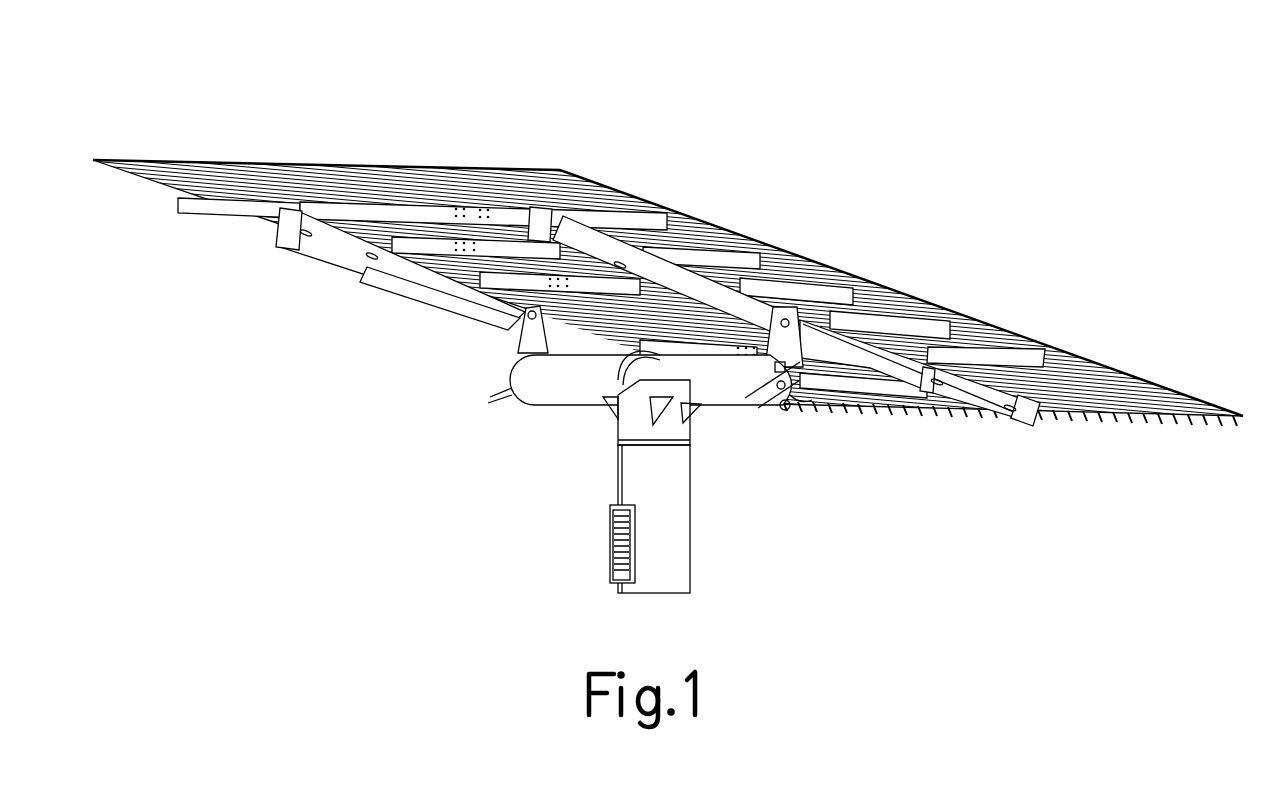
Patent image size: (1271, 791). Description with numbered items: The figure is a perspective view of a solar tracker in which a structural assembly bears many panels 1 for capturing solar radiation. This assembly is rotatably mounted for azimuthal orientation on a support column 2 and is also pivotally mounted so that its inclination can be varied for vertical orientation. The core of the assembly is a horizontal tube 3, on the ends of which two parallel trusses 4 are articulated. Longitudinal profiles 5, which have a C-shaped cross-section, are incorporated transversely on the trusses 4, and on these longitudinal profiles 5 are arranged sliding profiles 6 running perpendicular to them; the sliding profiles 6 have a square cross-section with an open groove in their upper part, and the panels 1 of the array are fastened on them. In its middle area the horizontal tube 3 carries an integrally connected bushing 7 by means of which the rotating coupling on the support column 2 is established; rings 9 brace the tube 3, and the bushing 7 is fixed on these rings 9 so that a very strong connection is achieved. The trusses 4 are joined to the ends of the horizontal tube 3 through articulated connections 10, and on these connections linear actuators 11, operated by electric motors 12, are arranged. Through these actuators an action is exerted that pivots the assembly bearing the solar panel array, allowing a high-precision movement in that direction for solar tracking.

The panels 1 is at (929, 300).
The support column 2 is at (670, 497).
The horizontal tube 3 is at (567, 382).
The trusses 4 is at (352, 251).
The longitudinal profiles 5 is at (583, 275).
The sliding profiles 6 is at (292, 183).
The bushing 7 is at (637, 410).
The rings 9 is at (660, 360).
The articulated connections 10 is at (783, 318).
The linear actuators 11 is at (758, 408).
The electric motors 12 is at (807, 407).